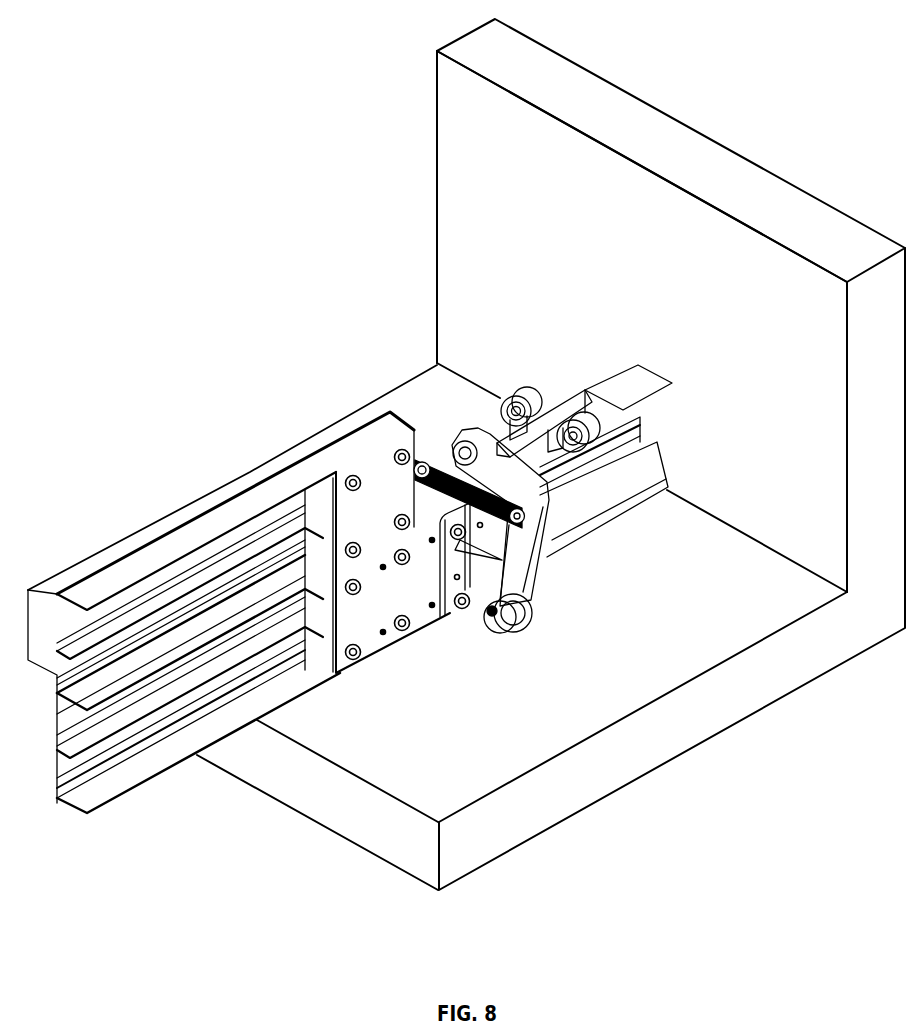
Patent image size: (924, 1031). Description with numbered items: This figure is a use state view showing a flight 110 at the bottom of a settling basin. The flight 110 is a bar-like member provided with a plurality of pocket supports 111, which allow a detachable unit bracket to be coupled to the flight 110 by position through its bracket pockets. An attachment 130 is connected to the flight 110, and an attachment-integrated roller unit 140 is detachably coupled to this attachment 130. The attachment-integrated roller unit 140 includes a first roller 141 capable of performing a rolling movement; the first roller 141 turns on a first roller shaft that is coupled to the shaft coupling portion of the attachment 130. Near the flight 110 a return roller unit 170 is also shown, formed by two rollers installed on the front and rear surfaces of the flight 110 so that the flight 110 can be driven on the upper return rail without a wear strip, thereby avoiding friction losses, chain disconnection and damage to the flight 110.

The flight 110 is at (130, 547).
The pocket supports 111 is at (397, 450).
The attachment 130 is at (542, 562).
The attachment-integrated roller unit 140 is at (536, 655).
The first roller 141 is at (530, 618).
The return roller unit 170 is at (518, 378).